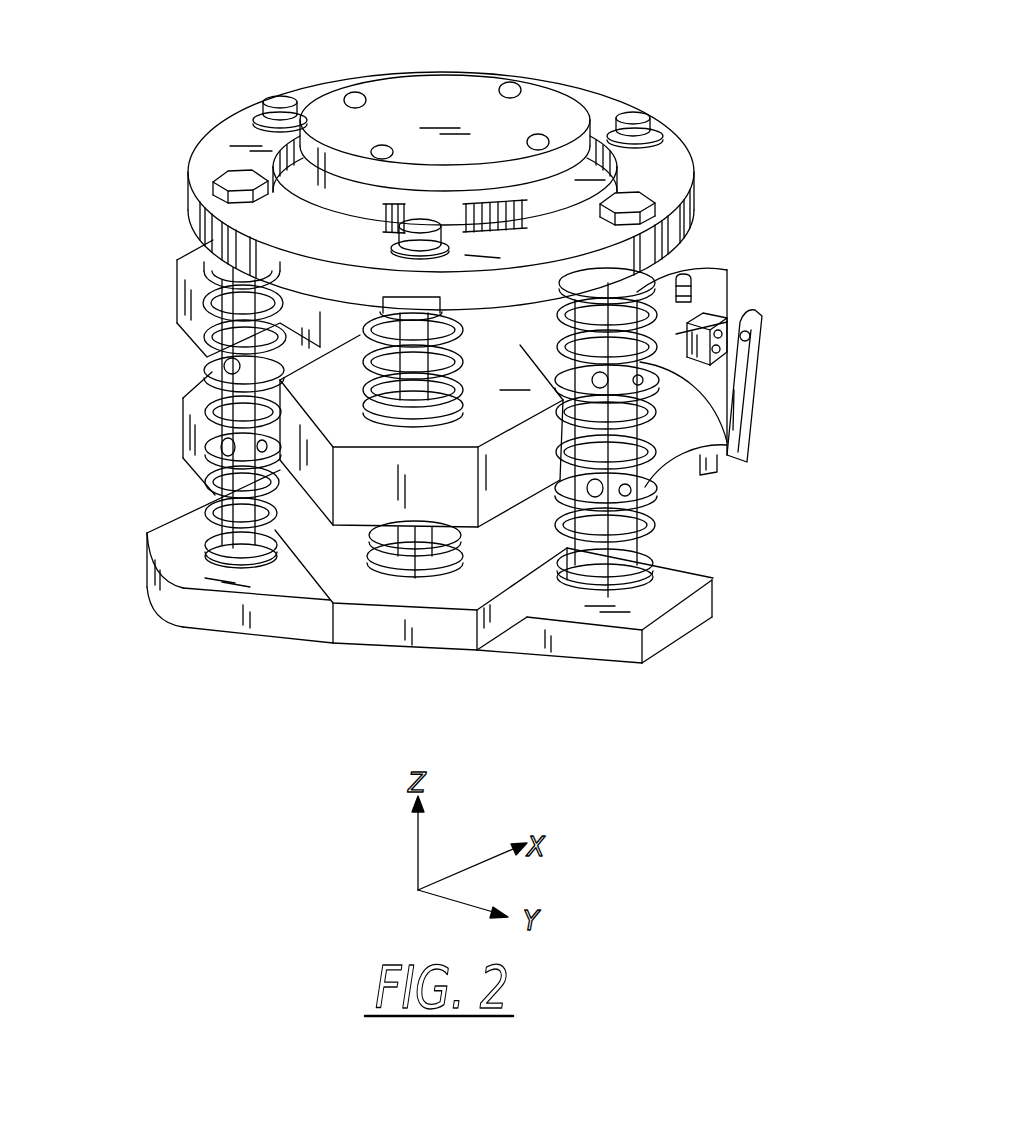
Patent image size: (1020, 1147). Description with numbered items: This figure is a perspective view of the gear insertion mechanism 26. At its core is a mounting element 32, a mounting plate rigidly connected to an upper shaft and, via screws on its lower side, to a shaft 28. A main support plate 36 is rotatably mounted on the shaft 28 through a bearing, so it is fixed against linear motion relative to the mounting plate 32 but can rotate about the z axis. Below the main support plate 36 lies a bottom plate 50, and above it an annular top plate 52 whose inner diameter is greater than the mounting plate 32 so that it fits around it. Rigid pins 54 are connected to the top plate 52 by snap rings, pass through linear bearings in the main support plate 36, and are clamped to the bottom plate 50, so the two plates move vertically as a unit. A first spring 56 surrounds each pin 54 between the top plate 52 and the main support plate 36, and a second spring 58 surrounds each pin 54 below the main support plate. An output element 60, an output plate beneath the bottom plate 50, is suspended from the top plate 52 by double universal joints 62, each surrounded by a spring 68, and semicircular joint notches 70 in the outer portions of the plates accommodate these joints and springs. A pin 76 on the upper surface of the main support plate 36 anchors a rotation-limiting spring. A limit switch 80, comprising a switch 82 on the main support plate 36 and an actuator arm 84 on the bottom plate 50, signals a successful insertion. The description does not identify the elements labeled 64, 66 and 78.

The gear insertion mechanism 26 is at (148, 210).
The shaft 28 is at (492, 214).
The mounting element 32 is at (432, 42).
The main support plate 36 is at (730, 282).
The bottom plate 50 is at (375, 638).
The annular top plate 52 is at (600, 87).
The rigid pins 54 is at (290, 98).
The first spring 56 is at (462, 357).
The second spring 58 is at (337, 512).
The output element 60 is at (167, 598).
The double universal joints 62 is at (220, 505).
The guide collar 64 is at (210, 363).
The pin collar 66 is at (225, 443).
The spring 68 is at (210, 377).
The joint notches 70 is at (298, 358).
The pin 76 is at (686, 280).
The hex nuts 78 is at (228, 172).
The limit switch 80 is at (805, 335).
The switch 82 is at (728, 318).
The actuator arm 84 is at (750, 368).